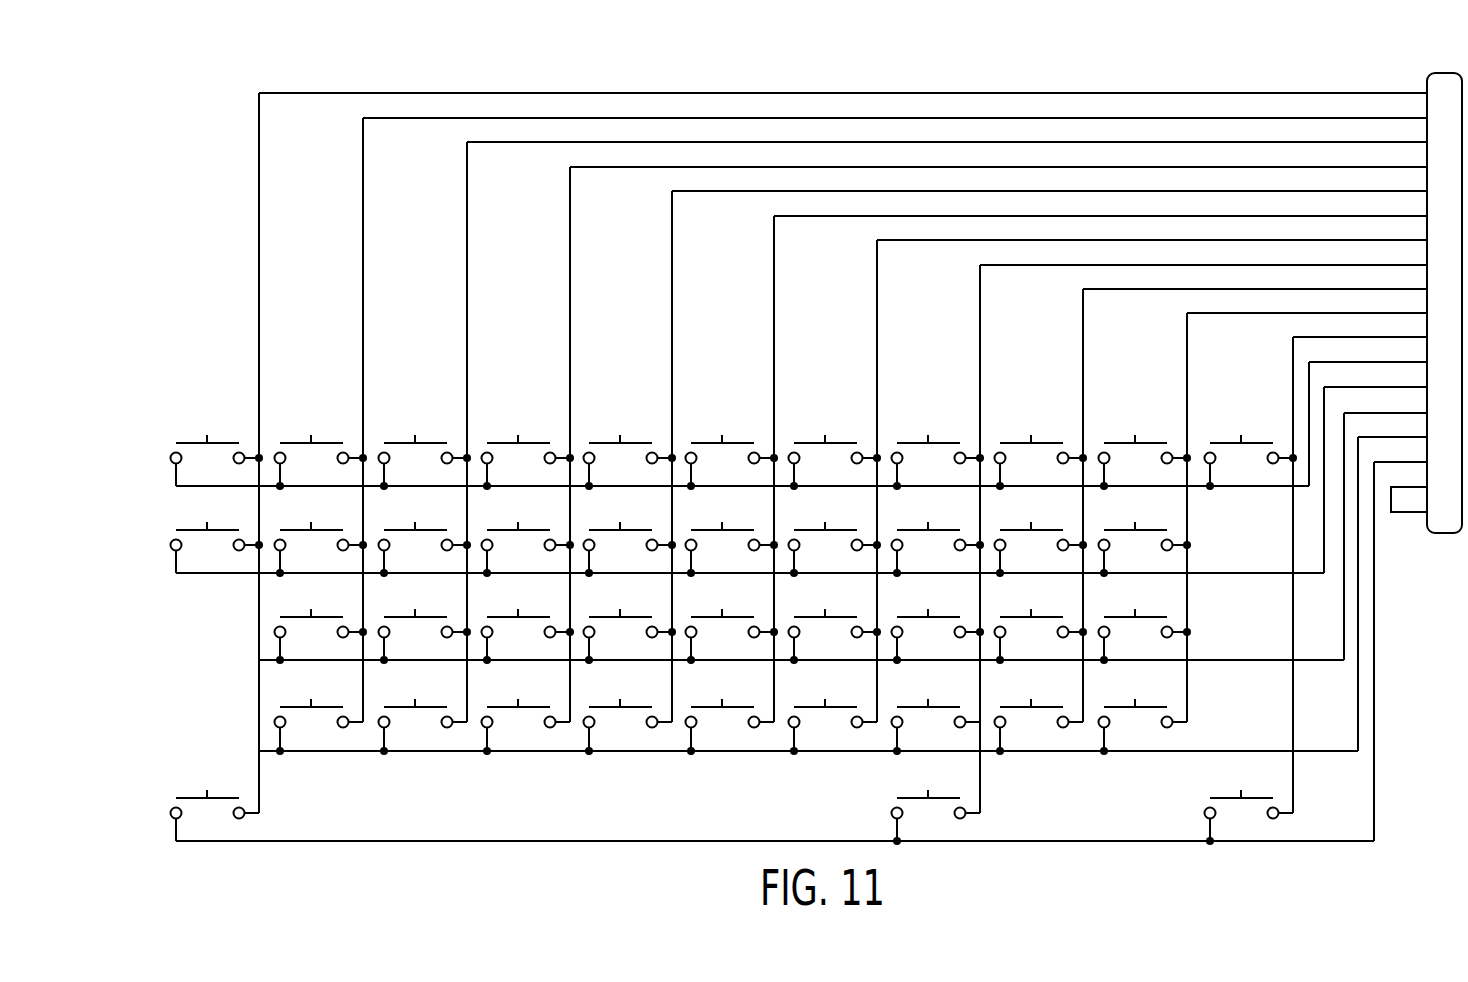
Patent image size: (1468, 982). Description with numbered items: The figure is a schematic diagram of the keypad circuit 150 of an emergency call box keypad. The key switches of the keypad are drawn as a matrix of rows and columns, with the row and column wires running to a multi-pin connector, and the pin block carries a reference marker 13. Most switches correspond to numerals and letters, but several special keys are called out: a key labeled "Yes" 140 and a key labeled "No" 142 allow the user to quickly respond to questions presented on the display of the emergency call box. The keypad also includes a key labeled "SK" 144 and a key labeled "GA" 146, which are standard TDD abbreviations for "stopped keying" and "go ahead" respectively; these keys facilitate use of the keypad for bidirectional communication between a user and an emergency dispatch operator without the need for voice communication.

The keypad circuit 150 is at (1111, 91).
The "Yes" key 140 is at (1017, 737).
The "No" key 142 is at (1117, 737).
The "SK" key 144 is at (197, 817).
The "GA" key 146 is at (1257, 827).
The keyboard connector 13 is at (1399, 516).